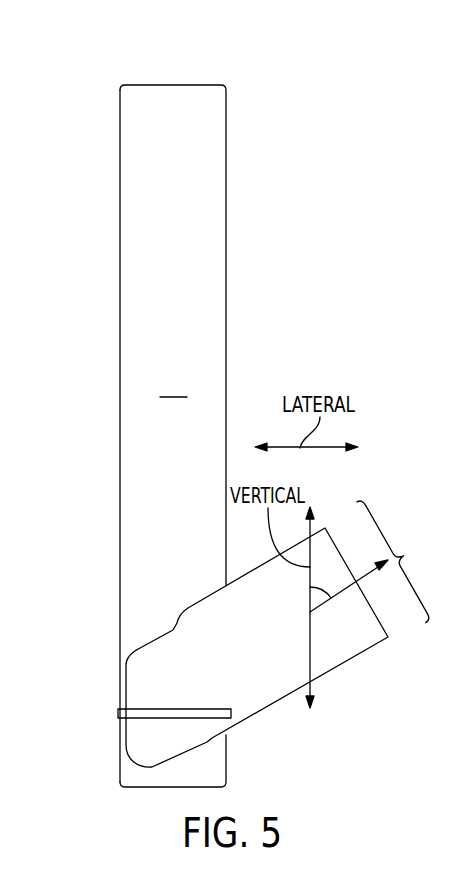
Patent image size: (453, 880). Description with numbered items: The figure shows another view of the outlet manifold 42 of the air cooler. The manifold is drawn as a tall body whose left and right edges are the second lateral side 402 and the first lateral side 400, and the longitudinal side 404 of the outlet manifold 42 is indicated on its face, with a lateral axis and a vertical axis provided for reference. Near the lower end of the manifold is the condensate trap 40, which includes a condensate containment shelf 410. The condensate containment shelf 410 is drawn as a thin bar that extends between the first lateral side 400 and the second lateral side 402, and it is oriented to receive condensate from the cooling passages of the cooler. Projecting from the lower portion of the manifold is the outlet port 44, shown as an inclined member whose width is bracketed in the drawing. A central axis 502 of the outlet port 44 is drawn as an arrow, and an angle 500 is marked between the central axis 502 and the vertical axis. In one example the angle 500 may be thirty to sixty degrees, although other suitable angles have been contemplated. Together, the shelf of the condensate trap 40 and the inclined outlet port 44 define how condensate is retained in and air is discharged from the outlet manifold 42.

The outlet manifold 42 is at (387, 79).
The first lateral side 400 is at (226, 390).
The second lateral side 402 is at (120, 390).
The longitudinal side 404 is at (173, 387).
The condensate containment shelf 410 is at (230, 701).
The condensate trap 40 is at (115, 744).
The outlet port 44 is at (397, 559).
The angle 500 is at (322, 590).
The central axis 502 is at (357, 582).